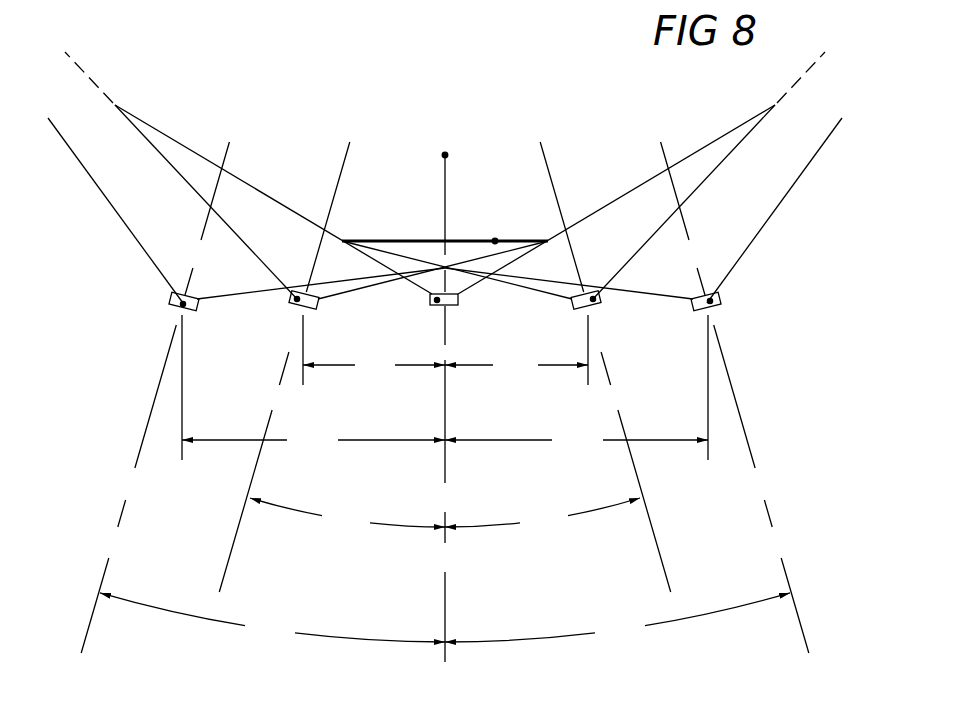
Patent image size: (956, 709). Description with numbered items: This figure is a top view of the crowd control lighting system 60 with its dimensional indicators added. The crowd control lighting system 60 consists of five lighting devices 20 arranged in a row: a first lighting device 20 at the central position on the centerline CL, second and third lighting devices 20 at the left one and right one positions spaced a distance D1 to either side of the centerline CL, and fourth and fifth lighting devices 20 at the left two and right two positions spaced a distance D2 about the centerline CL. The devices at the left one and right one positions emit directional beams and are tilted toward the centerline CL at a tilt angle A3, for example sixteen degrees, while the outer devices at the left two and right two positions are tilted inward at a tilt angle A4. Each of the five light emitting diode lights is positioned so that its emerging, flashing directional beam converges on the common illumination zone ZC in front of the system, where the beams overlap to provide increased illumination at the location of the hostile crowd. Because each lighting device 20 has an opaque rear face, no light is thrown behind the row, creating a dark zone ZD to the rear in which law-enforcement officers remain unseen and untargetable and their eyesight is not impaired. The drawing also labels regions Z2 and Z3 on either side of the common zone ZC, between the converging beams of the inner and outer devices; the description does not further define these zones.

The lighting device 20 is at (178, 303).
The crowd control lighting system 60 is at (729, 73).
The common illumination zone ZC is at (495, 240).
The centerline CL is at (445, 155).
The zone 2 Z2 is at (273, 199).
The zone 3 Z3 is at (616, 199).
The dark zone ZD is at (445, 295).
The distance D1 is at (445, 350).
The distance D2 is at (445, 387).
The tilt angle A3 is at (445, 515).
The tilt angle A4 is at (445, 618).